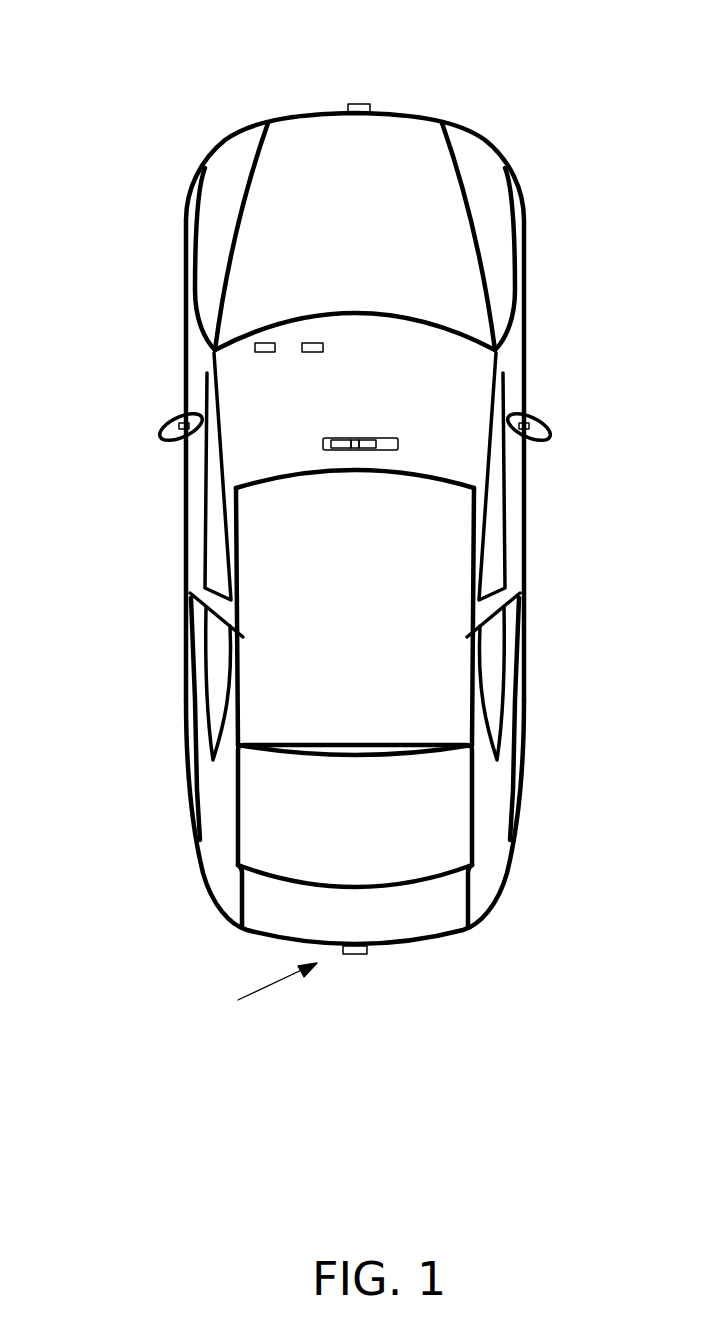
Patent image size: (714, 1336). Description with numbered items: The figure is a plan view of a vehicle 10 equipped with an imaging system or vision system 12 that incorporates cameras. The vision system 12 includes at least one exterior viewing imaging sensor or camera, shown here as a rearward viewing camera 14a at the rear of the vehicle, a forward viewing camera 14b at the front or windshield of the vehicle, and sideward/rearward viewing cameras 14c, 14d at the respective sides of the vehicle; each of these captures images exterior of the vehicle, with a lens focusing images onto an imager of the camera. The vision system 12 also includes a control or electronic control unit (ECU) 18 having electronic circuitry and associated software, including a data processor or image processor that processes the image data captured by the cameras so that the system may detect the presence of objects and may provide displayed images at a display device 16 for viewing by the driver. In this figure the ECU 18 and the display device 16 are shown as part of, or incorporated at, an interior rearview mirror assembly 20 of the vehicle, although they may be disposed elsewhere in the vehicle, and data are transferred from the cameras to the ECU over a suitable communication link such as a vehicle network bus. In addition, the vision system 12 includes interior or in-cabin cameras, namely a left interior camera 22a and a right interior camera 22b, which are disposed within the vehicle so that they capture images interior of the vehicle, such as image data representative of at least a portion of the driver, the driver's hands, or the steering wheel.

The vehicle 10 is at (118, 128).
The vision system 12 is at (261, 999).
The rearward viewing camera 14a is at (362, 954).
The forward viewing camera 14b is at (363, 104).
The sideward/rearward viewing camera 14c is at (170, 420).
The sideward/rearward viewing camera 14d is at (543, 420).
The display device 16 is at (340, 440).
The electronic control unit 18 is at (358, 438).
The interior rearview mirror assembly 20 is at (398, 438).
The left interior camera 22a is at (267, 342).
The right interior camera 22b is at (315, 342).